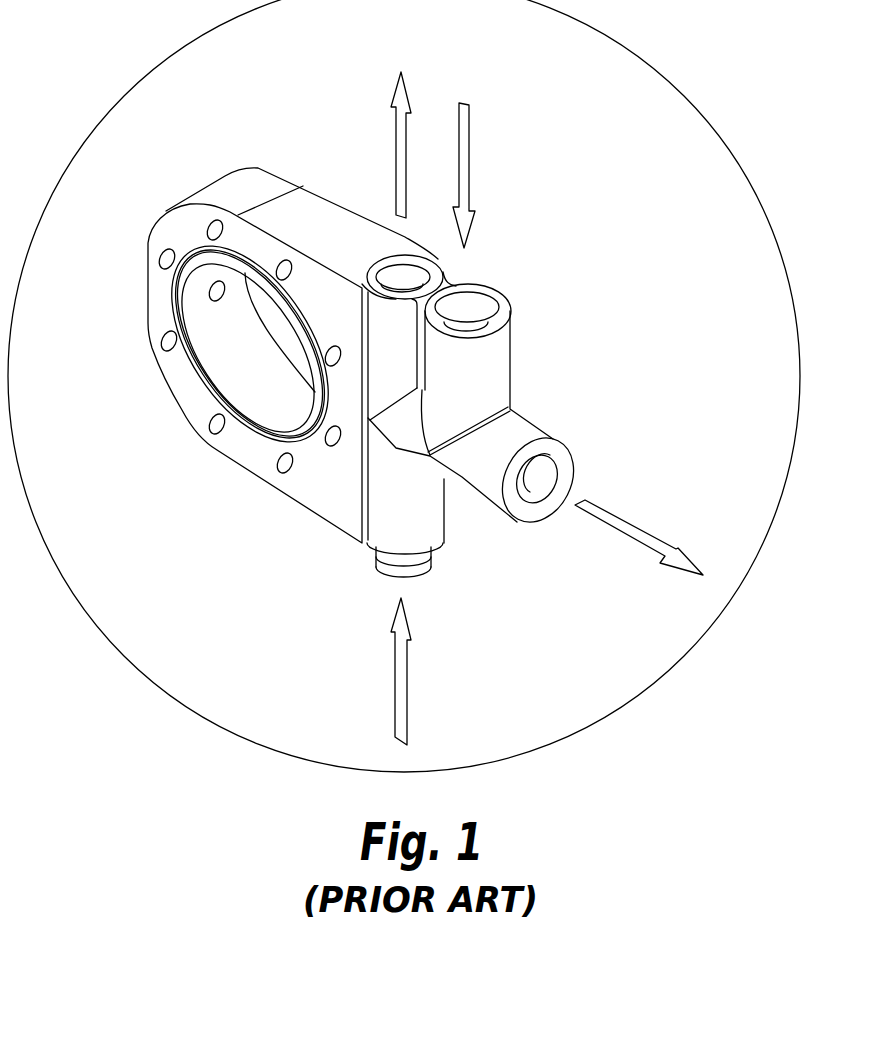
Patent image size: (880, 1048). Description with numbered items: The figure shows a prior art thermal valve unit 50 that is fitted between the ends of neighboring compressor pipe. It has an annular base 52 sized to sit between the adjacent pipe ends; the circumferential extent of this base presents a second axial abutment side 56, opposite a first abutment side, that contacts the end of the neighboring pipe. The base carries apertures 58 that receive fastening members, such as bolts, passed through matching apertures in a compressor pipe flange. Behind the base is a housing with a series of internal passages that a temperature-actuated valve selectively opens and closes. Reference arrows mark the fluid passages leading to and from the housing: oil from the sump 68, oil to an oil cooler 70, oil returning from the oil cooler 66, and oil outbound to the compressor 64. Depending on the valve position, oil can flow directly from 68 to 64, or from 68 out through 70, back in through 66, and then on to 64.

The thermal valve unit 50 is at (602, 206).
The base 52 is at (168, 208).
The second axial abutment side 56 is at (336, 200).
The apertures 58 is at (160, 340).
The oil outbound to the compressor 64 is at (657, 538).
The oil returning from the oil cooler 66 is at (470, 182).
The oil from the sump 68 is at (407, 677).
The oil to an oil cooler 70 is at (407, 135).